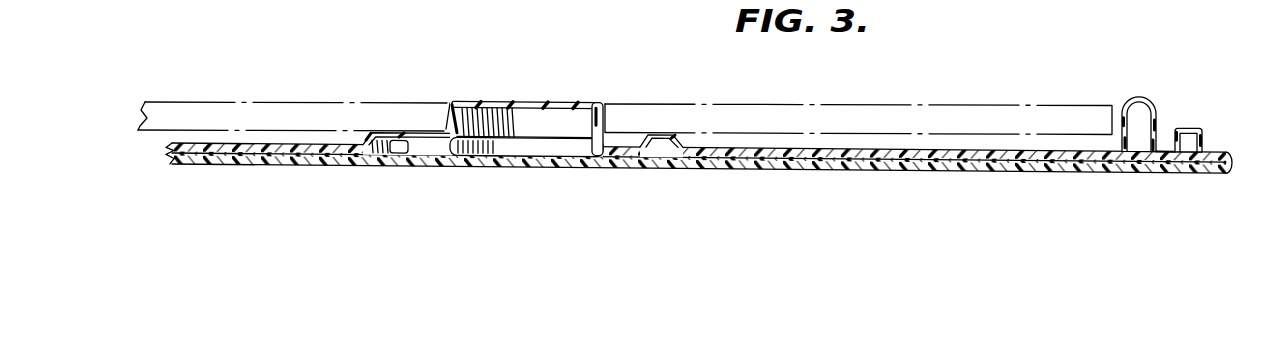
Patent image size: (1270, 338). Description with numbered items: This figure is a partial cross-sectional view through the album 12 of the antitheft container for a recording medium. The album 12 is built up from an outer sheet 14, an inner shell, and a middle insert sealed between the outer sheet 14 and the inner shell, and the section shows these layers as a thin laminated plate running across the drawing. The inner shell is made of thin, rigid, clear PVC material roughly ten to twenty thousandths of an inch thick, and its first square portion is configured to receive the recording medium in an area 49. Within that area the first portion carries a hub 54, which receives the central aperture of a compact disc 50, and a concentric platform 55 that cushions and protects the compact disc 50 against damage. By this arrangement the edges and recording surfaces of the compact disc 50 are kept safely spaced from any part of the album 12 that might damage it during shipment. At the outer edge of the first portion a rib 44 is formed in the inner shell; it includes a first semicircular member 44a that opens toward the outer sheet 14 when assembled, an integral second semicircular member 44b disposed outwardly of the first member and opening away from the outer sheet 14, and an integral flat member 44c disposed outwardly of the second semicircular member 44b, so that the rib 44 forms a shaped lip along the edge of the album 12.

The album 12 is at (866, 75).
The outer sheet 14 is at (699, 185).
The rib 44 is at (1180, 86).
The first semicircular member 44a is at (1142, 97).
The second semicircular member 44b is at (1162, 145).
The flat member 44c is at (1190, 128).
The area 49 is at (683, 140).
The compact disc 50 is at (945, 118).
The hub 54 is at (551, 102).
The concentric platform 55 is at (667, 131).